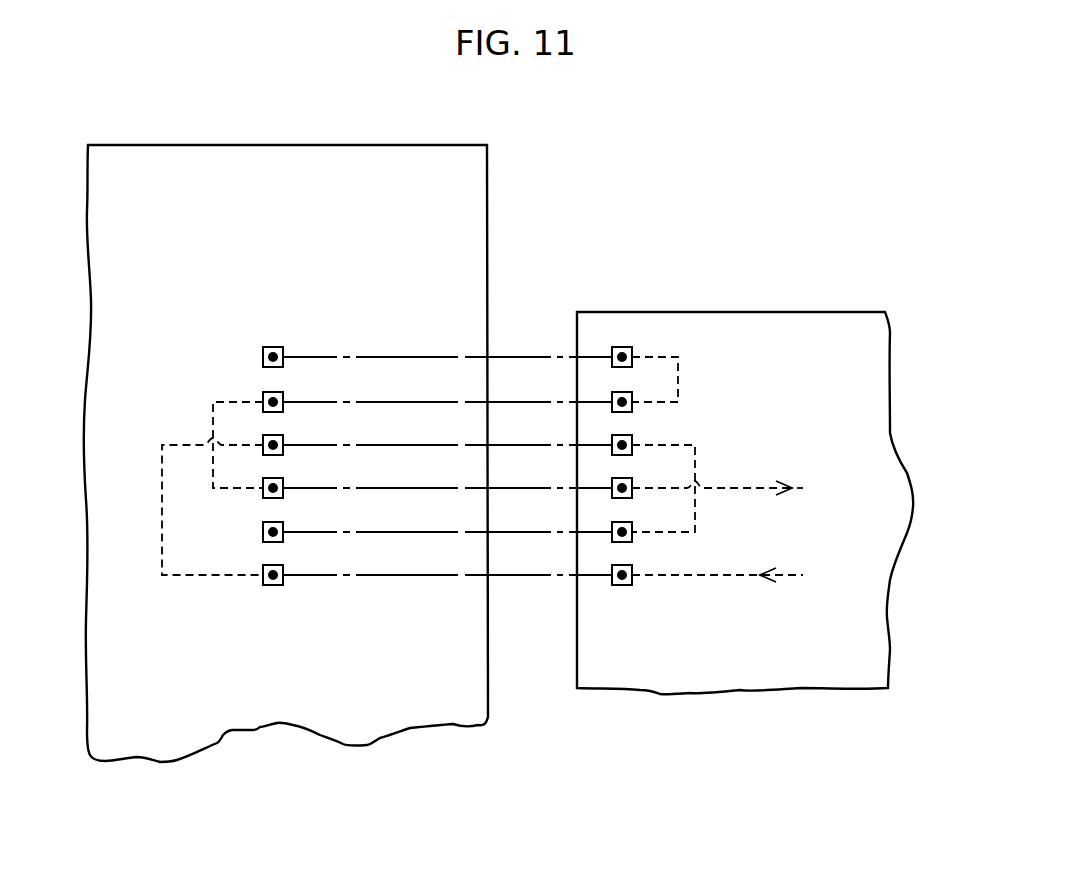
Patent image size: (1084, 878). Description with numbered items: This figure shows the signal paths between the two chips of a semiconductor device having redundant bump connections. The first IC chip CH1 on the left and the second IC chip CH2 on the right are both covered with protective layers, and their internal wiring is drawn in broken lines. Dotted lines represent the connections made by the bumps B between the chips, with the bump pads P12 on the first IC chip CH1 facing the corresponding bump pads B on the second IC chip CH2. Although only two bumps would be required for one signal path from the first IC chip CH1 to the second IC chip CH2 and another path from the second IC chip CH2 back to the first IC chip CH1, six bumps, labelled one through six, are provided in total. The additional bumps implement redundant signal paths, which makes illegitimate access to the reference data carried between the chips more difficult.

The first IC chip CH1 is at (407, 145).
The second IC chip CH2 is at (800, 312).
The ports of first chip P12 is at (271, 346).
The bumps B is at (622, 346).